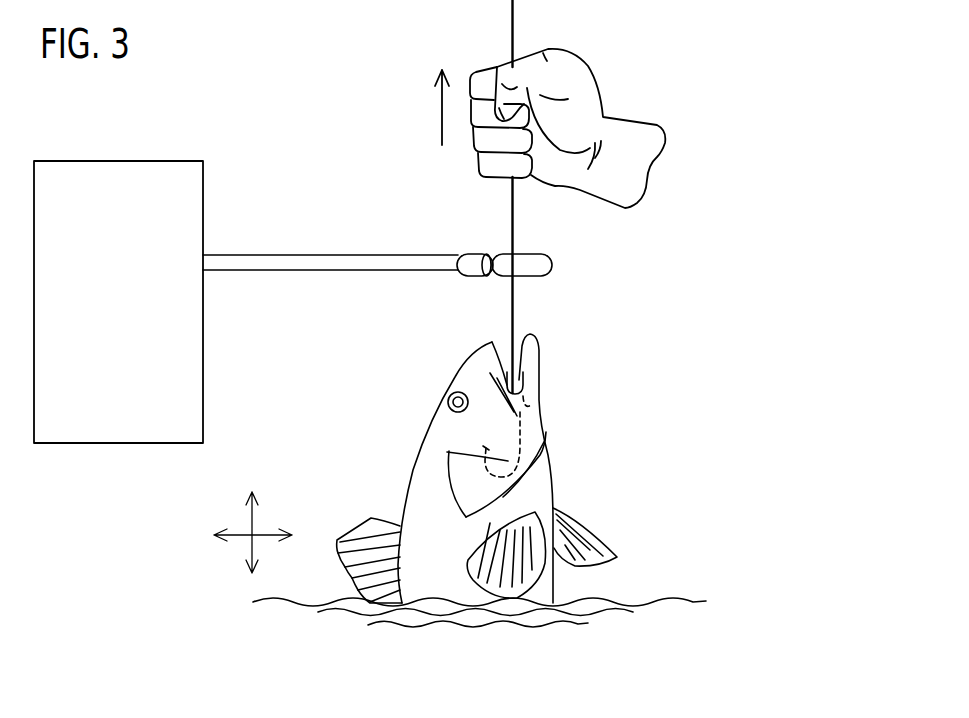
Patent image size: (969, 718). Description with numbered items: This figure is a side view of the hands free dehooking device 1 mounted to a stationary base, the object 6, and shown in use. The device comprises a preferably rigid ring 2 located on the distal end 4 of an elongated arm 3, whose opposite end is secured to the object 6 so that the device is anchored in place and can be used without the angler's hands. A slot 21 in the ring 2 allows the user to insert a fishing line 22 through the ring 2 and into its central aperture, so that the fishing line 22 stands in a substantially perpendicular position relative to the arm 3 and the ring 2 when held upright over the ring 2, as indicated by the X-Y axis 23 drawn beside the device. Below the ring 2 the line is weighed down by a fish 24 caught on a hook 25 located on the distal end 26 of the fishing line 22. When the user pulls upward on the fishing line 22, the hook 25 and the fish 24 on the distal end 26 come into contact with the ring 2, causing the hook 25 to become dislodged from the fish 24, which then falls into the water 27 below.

The hands free dehooking device 1 is at (347, 232).
The ring 2 is at (553, 259).
The elongated arm 3 is at (335, 273).
The distal end 4 is at (447, 276).
The object 6 is at (131, 307).
The slot 21 is at (494, 278).
The fishing line 22 is at (510, 215).
The X-Y axis 23 is at (252, 535).
The fish 24 is at (553, 484).
The hook 25 is at (520, 428).
The distal end 26 is at (512, 363).
The water 27 is at (659, 604).